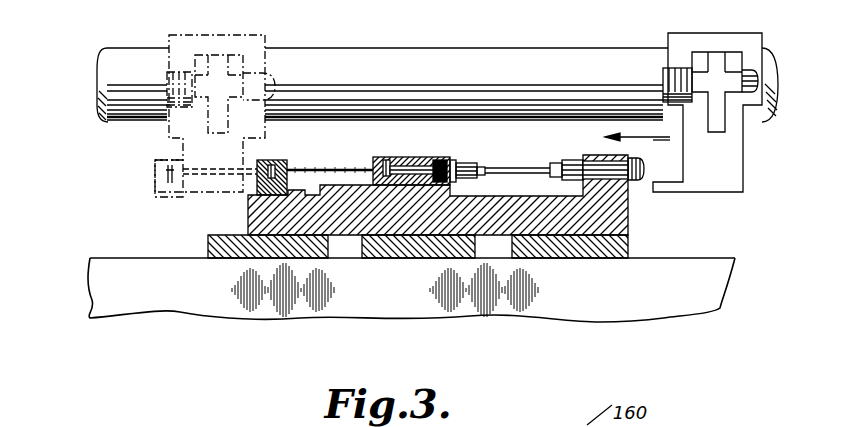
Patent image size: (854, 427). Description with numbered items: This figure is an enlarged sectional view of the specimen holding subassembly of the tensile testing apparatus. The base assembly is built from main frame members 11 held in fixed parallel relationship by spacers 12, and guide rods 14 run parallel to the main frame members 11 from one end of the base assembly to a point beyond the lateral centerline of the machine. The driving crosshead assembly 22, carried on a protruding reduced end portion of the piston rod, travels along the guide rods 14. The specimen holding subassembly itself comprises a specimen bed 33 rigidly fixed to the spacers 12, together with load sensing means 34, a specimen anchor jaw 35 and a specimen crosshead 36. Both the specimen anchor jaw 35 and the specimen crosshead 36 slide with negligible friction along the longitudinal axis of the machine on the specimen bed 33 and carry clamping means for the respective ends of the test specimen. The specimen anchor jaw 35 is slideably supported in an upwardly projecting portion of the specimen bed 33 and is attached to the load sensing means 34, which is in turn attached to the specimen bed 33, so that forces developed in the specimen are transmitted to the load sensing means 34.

The main frame member 11 is at (205, 312).
The spacer 12 is at (239, 250).
The guide rod 14 is at (451, 50).
The driving crosshead assembly 22 is at (692, 42).
The specimen bed 33 is at (607, 222).
The load sensing means 34 is at (522, 167).
The specimen anchor jaw 35 is at (415, 157).
The specimen crosshead 36 is at (160, 160).